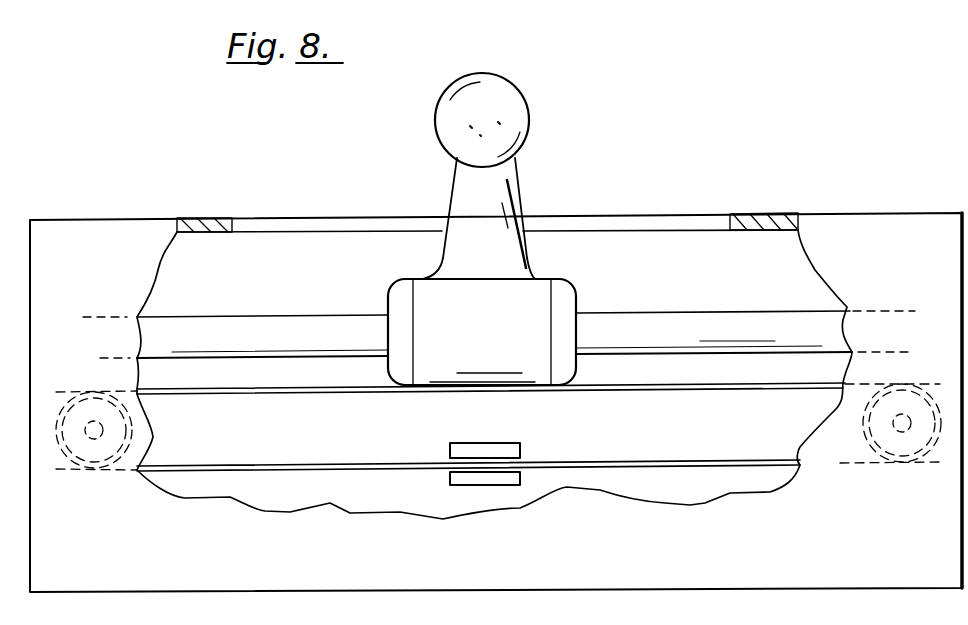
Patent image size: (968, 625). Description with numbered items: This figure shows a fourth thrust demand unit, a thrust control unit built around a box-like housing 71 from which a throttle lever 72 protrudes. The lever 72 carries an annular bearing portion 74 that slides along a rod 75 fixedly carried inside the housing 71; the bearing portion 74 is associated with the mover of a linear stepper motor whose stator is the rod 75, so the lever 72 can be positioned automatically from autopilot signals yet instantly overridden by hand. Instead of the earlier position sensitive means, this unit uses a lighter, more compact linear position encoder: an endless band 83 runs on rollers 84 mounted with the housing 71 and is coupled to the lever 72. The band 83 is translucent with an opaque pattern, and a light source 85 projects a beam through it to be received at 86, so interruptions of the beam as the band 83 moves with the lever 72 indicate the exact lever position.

The housing 71 is at (840, 223).
The throttle lever 72 is at (533, 148).
The annular bearing portion 74 is at (532, 290).
The rod 75 is at (742, 317).
The endless band 83 is at (343, 462).
The rollers 84 is at (93, 457).
The light source 85 is at (513, 440).
The light receiver 86 is at (457, 485).